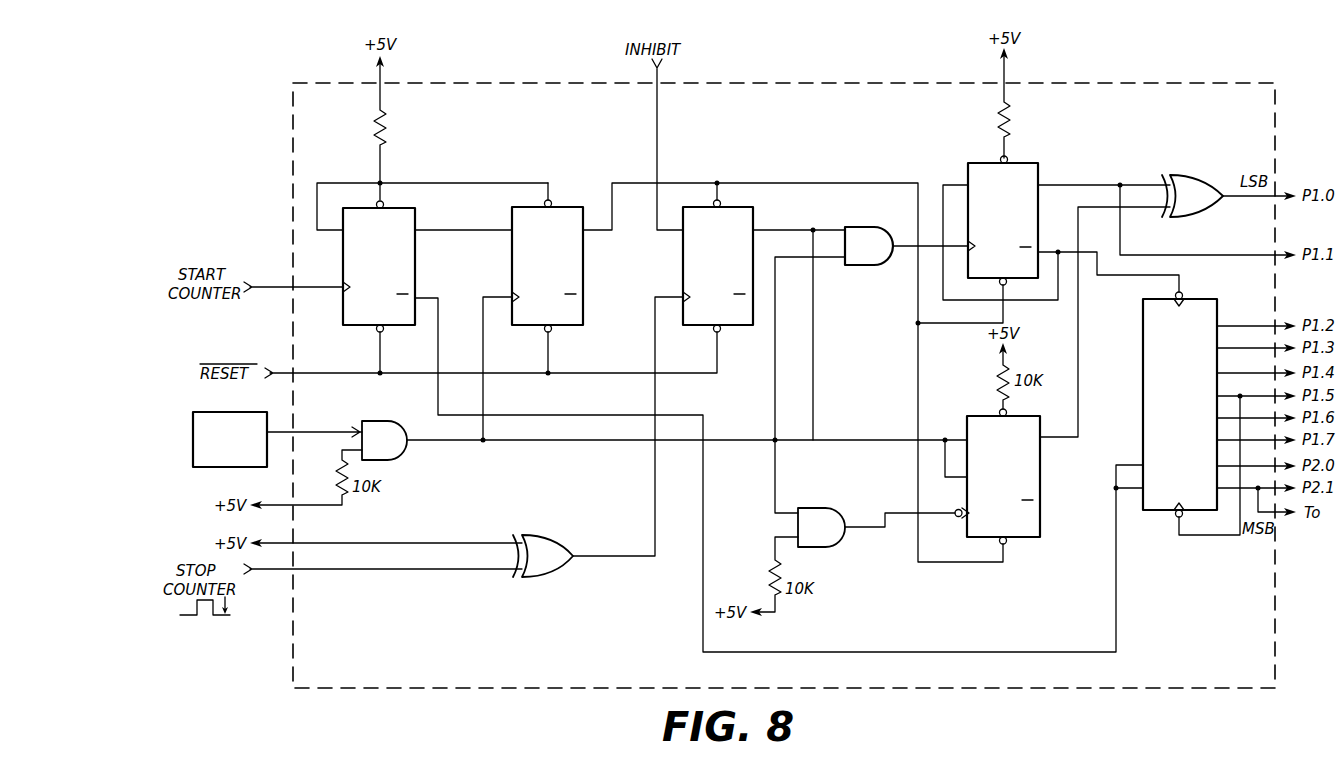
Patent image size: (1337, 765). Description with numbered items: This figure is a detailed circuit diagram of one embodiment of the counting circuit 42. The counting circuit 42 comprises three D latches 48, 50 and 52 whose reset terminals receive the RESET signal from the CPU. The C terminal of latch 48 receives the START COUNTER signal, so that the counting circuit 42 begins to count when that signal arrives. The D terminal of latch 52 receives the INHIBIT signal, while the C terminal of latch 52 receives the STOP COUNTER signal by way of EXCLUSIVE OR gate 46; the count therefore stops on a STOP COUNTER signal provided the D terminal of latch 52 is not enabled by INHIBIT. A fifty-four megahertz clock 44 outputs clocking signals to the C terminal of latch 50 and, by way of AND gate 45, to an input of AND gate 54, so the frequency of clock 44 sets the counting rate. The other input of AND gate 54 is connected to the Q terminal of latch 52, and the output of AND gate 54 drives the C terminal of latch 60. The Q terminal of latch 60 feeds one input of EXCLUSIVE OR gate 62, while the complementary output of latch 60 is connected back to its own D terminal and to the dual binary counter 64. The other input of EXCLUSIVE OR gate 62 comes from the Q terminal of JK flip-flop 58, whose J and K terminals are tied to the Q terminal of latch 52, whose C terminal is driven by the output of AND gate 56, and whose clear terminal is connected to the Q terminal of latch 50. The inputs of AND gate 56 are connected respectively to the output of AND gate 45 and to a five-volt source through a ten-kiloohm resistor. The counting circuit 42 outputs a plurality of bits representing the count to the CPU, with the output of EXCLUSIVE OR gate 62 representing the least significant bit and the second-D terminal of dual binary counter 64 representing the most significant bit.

The counting circuit 42 is at (1146, 84).
The 54-MHz clock 44 is at (204, 468).
The AND gate 45 is at (405, 459).
The EXCLUSIVE OR gate 46 is at (548, 578).
The D latch 48 is at (415, 268).
The D latch 50 is at (583, 268).
The D latch 52 is at (741, 326).
The AND gate 54 is at (876, 266).
The AND gate 56 is at (833, 498).
The JK flip-flop 58 is at (1040, 485).
The D latch 60 is at (976, 163).
The EXCLUSIVE OR gate 62 is at (1208, 176).
The dual binary counter 64 is at (1143, 401).